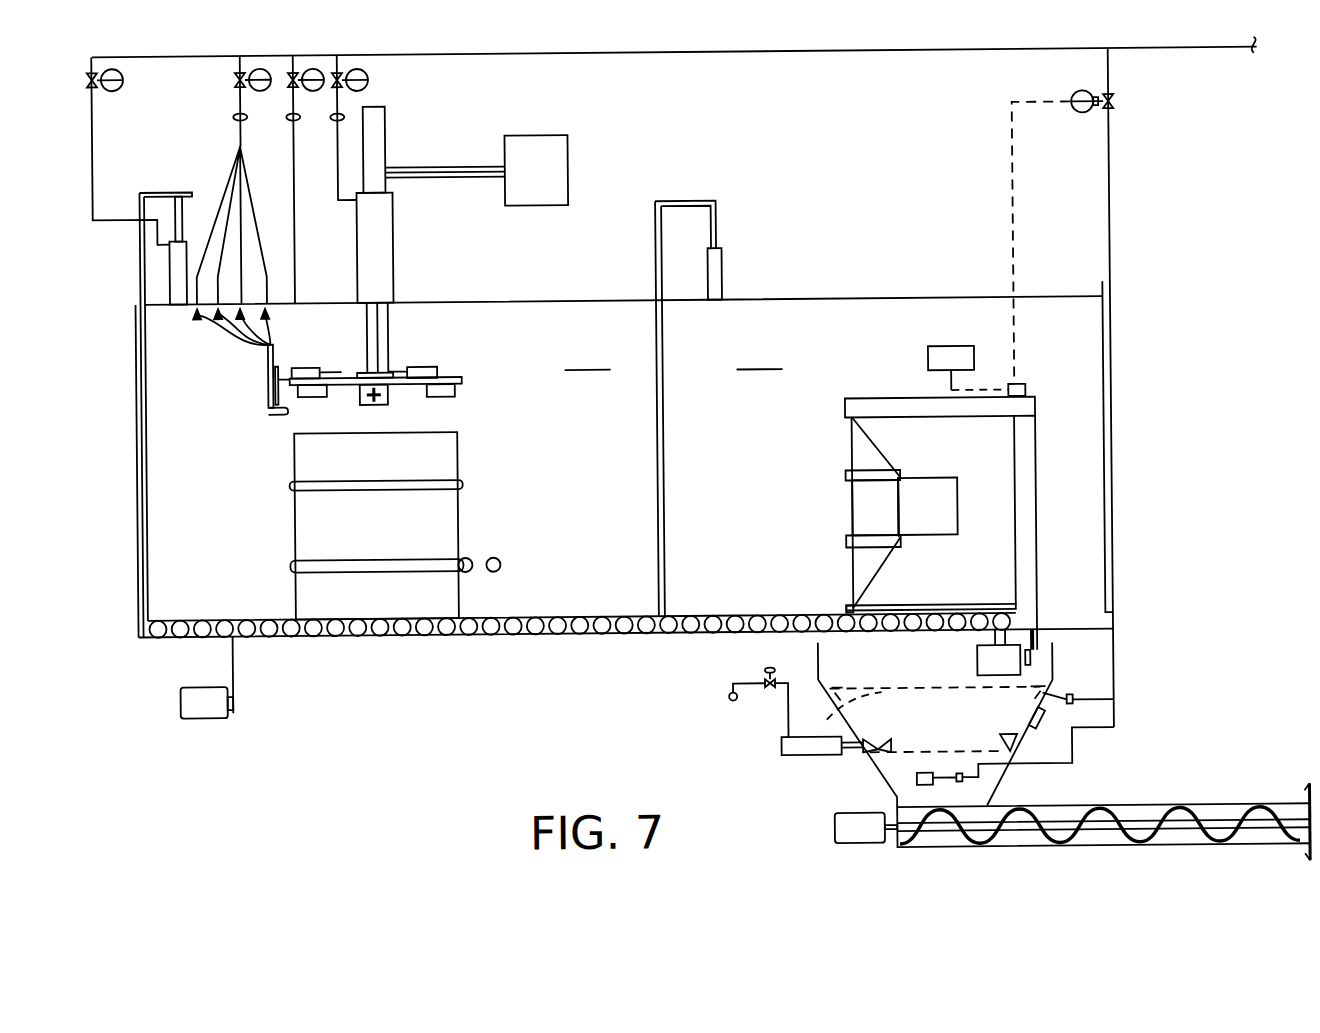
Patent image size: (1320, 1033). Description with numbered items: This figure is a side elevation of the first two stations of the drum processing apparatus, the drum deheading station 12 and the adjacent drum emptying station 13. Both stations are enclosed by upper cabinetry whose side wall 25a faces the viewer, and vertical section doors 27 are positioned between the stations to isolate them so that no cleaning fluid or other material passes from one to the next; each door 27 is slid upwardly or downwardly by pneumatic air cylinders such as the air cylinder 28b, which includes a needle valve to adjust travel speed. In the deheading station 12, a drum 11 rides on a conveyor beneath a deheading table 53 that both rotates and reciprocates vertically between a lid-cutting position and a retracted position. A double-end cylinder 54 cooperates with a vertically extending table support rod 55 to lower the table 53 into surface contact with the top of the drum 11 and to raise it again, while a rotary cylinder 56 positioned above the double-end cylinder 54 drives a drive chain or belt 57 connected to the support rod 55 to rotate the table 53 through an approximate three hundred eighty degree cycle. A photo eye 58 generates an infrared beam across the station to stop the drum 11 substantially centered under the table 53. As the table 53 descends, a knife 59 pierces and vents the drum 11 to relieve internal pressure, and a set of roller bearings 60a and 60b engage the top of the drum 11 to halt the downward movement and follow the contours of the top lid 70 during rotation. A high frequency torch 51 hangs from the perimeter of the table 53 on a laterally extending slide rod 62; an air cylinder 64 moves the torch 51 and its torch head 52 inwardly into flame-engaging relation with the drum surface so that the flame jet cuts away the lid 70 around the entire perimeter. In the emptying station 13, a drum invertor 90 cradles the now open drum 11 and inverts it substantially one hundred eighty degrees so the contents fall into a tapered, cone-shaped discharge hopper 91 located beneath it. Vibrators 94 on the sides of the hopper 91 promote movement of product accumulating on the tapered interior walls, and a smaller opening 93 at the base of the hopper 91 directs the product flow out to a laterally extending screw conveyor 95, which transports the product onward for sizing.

The drum 11 is at (447, 465).
The drum deheading station 12 is at (153, 408).
The drum emptying station 13 is at (821, 332).
The side wall 25a is at (673, 358).
The vertical section door 27 is at (148, 493).
The pneumatic air cylinder 28b is at (173, 281).
The high frequency torch 51 is at (270, 382).
The torch head 52 is at (268, 412).
The deheading table 53 is at (380, 380).
The double-end cylinder 54 is at (373, 244).
The table support rod 55 is at (394, 318).
The rotary cylinder 56 is at (556, 152).
The drive chain or belt 57 is at (441, 168).
The photo eye 58 is at (498, 560).
The knife 59 is at (395, 373).
The roller bearing 60a is at (315, 399).
The roller bearing 60b is at (459, 400).
The slide rod 62 is at (287, 369).
The air cylinder 64 is at (310, 370).
The top lid 70 is at (452, 436).
The drum invertor 90 is at (896, 432).
The discharge hopper 91 is at (833, 724).
The smaller opening 93 is at (956, 805).
The vibrator 94 is at (1030, 726).
The screw conveyor 95 is at (1053, 853).